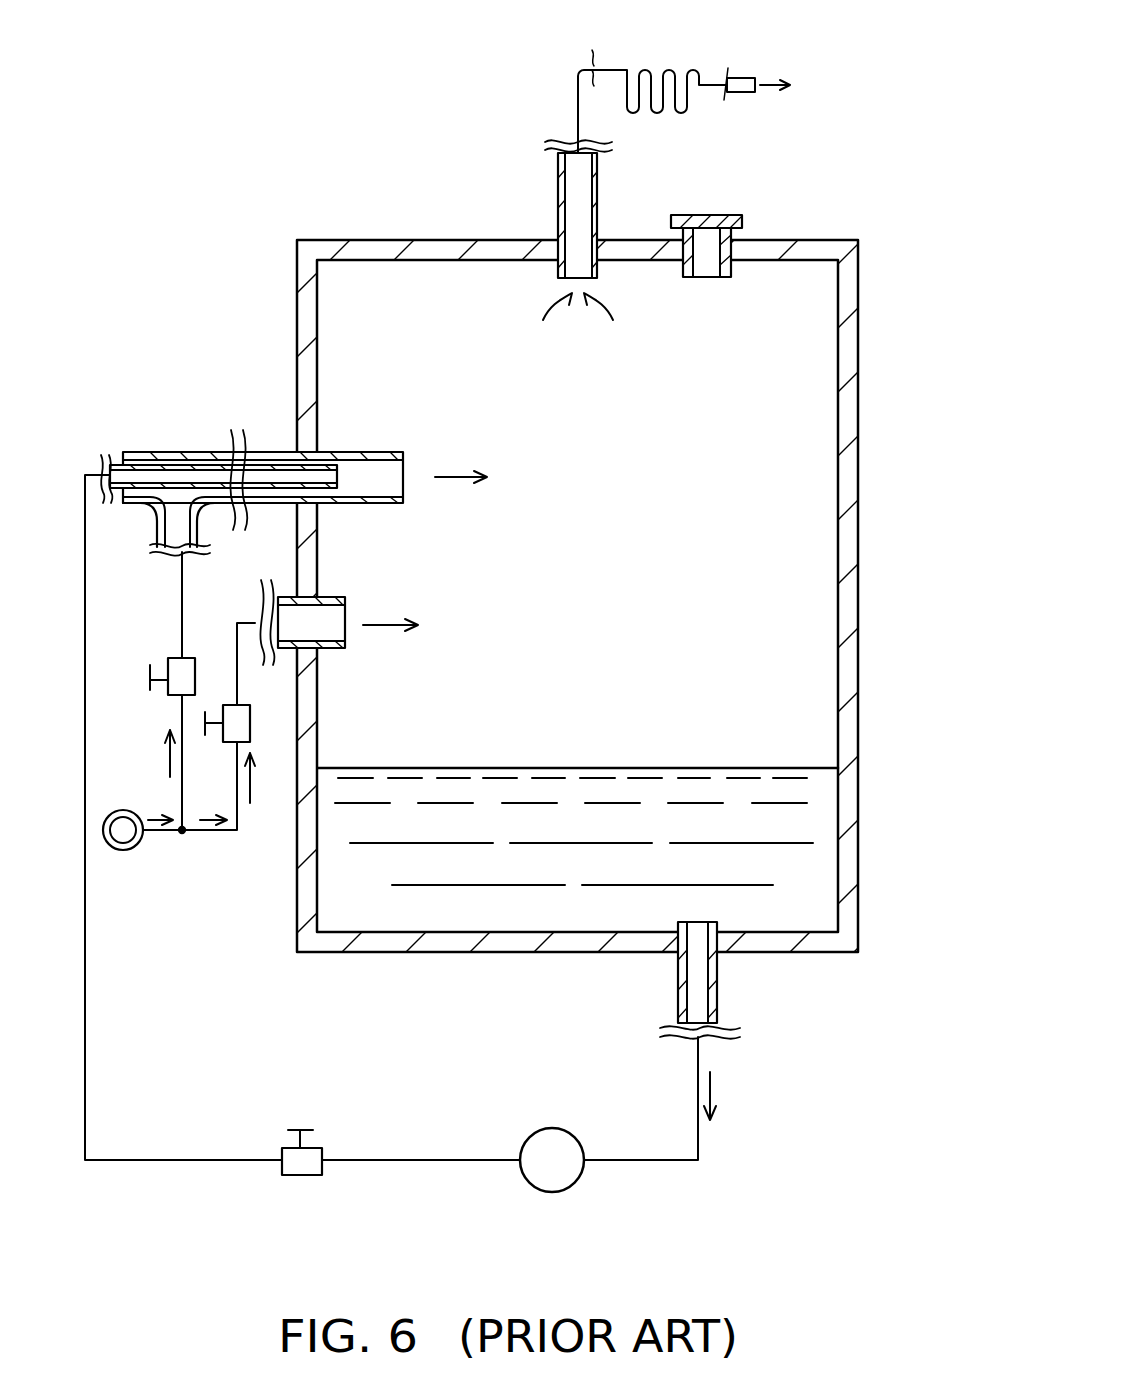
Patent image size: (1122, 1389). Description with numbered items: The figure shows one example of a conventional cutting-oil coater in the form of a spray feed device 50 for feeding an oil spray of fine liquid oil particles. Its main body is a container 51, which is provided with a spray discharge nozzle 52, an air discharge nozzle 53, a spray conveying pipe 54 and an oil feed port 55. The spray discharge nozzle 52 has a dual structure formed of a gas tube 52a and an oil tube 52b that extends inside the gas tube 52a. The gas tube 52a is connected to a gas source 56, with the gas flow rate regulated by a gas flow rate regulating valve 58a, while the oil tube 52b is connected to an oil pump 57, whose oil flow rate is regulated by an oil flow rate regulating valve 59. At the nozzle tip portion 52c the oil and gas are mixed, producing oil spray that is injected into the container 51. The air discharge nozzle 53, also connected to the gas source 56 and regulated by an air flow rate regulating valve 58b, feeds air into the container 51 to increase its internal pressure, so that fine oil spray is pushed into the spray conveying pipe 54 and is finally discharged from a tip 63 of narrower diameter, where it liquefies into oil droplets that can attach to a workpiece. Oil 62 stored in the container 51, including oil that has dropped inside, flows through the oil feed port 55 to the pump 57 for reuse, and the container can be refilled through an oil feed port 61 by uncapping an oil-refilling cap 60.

The spray feed device 50 is at (561, 552).
The container 51 is at (848, 412).
The spray discharge nozzle 52 is at (294, 460).
The gas tube 52a is at (280, 448).
The oil tube 52b is at (338, 458).
The nozzle tip portion 52c is at (403, 462).
The air discharge nozzle 53 is at (340, 598).
The spray conveying pipe 54 is at (558, 188).
The oil feed port 55 is at (718, 1005).
The gas source 56 is at (123, 852).
The oil pump 57 is at (550, 1128).
The gas flow rate regulating valve 58a is at (175, 658).
The air flow rate regulating valve 58b is at (234, 705).
The oil flow rate regulating valve 59 is at (322, 1150).
The oil-refilling cap 60 is at (737, 249).
The oil feed port 61 is at (705, 278).
The oil 62 is at (812, 855).
The tip 63 is at (738, 78).